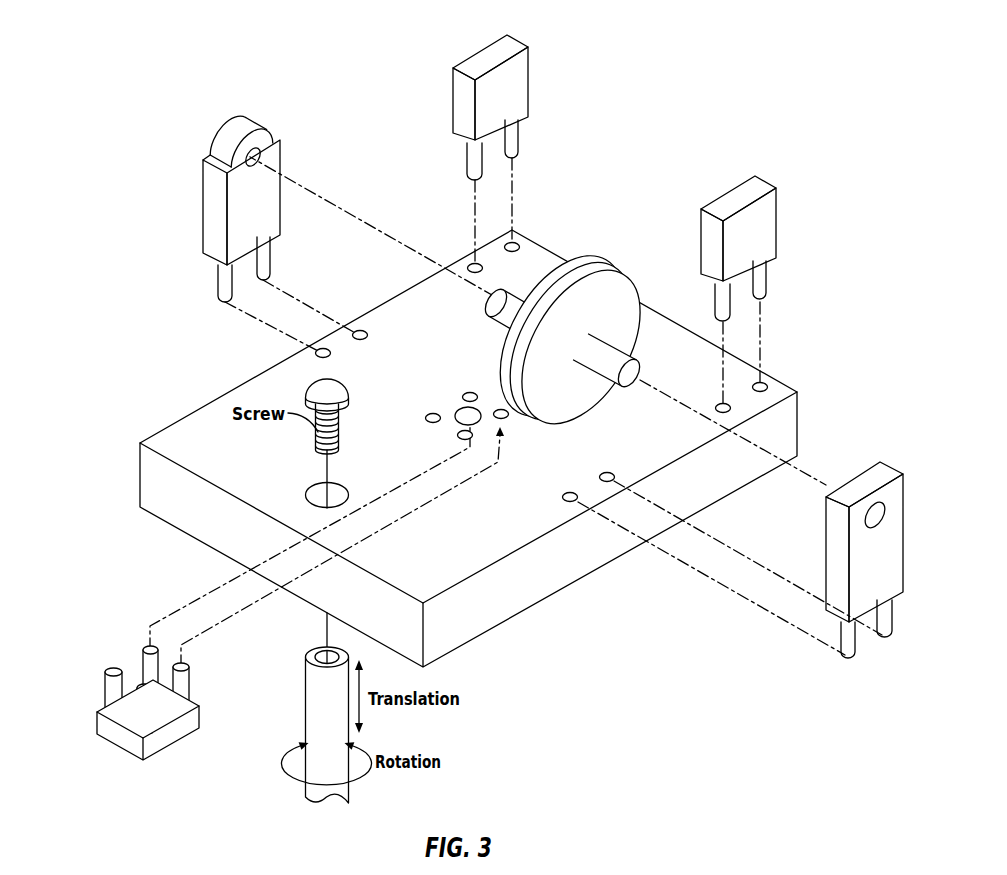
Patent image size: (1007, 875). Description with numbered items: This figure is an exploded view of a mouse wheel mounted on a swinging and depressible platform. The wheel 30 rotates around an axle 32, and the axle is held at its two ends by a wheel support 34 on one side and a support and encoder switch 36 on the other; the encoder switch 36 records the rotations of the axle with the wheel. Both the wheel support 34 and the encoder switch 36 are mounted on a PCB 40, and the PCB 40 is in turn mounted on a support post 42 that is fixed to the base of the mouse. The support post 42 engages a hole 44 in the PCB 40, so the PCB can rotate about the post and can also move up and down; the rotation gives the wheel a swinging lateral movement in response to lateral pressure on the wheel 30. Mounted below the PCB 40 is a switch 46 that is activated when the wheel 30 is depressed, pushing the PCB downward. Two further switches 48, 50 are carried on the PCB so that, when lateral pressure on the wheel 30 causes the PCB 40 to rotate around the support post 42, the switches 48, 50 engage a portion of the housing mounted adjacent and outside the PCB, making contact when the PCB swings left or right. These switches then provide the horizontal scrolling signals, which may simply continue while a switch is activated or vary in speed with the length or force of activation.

The wheel 30 is at (595, 267).
The axle 32 is at (500, 306).
The wheel support 34 is at (882, 472).
The support and encoder switch 36 is at (235, 132).
The PCB 40 is at (172, 438).
The support post 42 is at (310, 695).
The hole 44 is at (317, 497).
The switch 46 is at (105, 725).
The switch 48 is at (490, 57).
The switch 50 is at (762, 187).